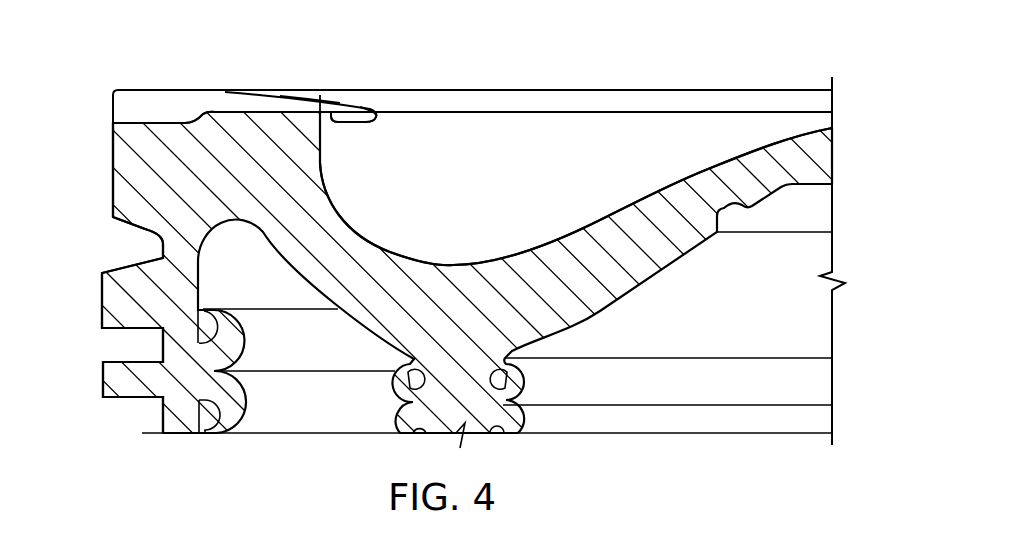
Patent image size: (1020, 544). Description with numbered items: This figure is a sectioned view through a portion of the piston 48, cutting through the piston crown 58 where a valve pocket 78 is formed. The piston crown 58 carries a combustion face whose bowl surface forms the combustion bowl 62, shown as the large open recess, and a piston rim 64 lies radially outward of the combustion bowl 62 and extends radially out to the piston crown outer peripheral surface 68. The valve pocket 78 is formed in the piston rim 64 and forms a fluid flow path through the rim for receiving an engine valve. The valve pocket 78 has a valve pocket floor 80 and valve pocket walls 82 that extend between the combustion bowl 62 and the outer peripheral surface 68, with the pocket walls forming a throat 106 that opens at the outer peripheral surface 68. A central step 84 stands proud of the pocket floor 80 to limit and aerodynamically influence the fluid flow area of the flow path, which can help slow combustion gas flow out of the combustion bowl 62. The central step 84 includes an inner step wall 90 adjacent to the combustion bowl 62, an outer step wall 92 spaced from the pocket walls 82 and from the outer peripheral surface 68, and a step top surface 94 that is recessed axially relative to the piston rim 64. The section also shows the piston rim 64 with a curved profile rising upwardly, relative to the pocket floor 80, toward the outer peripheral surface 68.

The piston 48 is at (850, 75).
The piston crown 58 is at (113, 218).
The combustion bowl 62 is at (453, 213).
The piston rim 64 is at (322, 95).
The piston crown outer peripheral surface 68 is at (113, 166).
The valve pocket 78 is at (193, 90).
The valve pocket floor 80 is at (112, 123).
The valve pocket wall 82 is at (246, 91).
The central step 84 is at (274, 113).
The inner step wall 90 is at (331, 114).
The outer step wall 92 is at (188, 123).
The step top surface 94 is at (290, 101).
The throat 106 is at (112, 96).